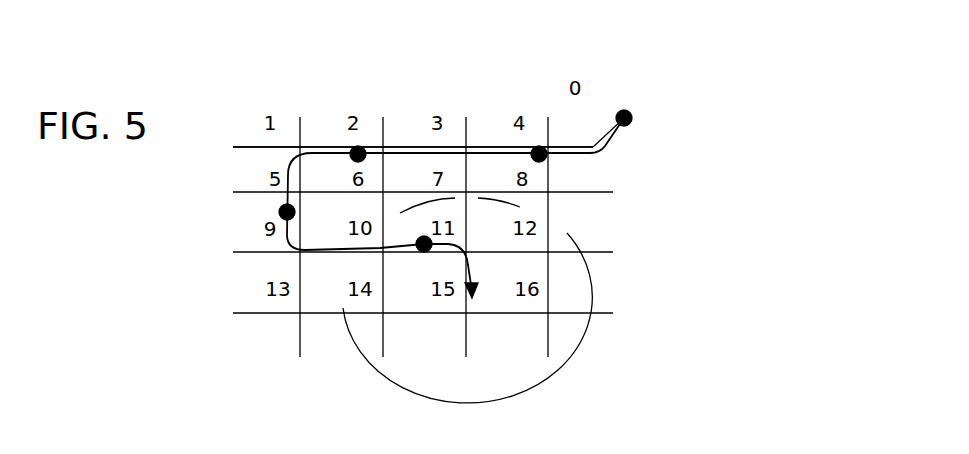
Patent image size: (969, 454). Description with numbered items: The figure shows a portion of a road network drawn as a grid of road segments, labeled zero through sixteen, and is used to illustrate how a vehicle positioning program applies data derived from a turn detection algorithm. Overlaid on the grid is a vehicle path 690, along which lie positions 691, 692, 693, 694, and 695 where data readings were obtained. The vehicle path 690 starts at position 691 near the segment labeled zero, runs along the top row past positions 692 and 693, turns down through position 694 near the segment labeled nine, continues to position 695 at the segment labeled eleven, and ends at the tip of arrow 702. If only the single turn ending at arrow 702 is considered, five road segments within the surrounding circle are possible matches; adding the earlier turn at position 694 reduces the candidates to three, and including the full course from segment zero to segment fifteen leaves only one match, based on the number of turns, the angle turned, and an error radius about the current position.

The vehicle path 690 is at (284, 161).
The position 691 is at (627, 100).
The position 692 is at (540, 130).
The position 693 is at (342, 143).
The position 694 is at (270, 210).
The position 695 is at (428, 260).
The arrow 702 is at (490, 283).